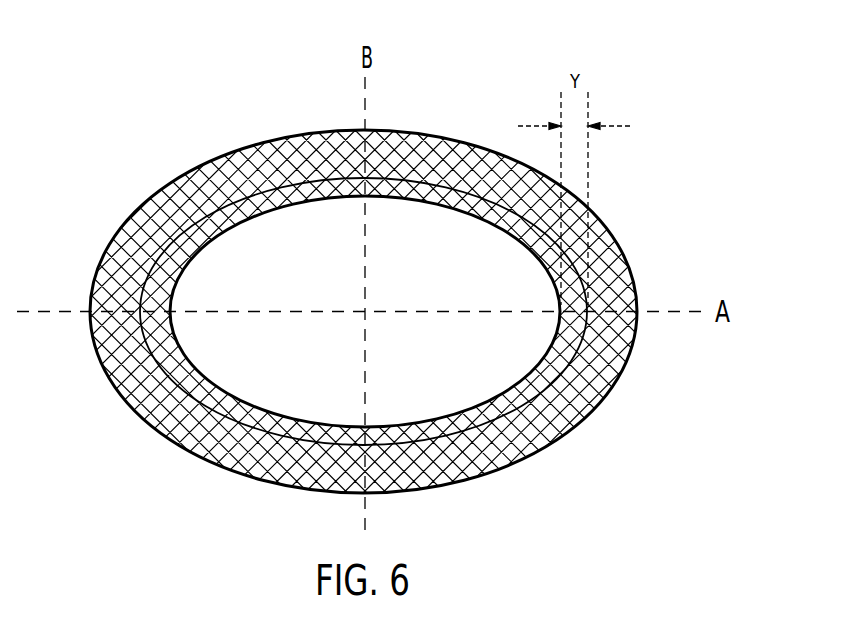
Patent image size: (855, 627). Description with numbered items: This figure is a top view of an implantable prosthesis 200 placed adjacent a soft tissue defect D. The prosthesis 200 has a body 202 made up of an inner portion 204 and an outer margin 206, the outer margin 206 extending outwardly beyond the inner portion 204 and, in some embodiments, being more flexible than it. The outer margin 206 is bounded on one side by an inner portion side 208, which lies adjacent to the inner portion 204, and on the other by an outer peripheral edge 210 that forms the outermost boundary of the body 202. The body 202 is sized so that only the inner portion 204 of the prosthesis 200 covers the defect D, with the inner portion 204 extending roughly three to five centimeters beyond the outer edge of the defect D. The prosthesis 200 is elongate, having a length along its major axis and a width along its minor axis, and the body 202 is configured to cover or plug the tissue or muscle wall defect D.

The prosthesis 200 is at (488, 82).
The body 202 is at (600, 217).
The inner portion 204 is at (143, 313).
The outer margin 206 is at (212, 173).
The inner portion side 208 is at (542, 393).
The outer peripheral edge 210 is at (120, 387).
The defect D is at (282, 378).